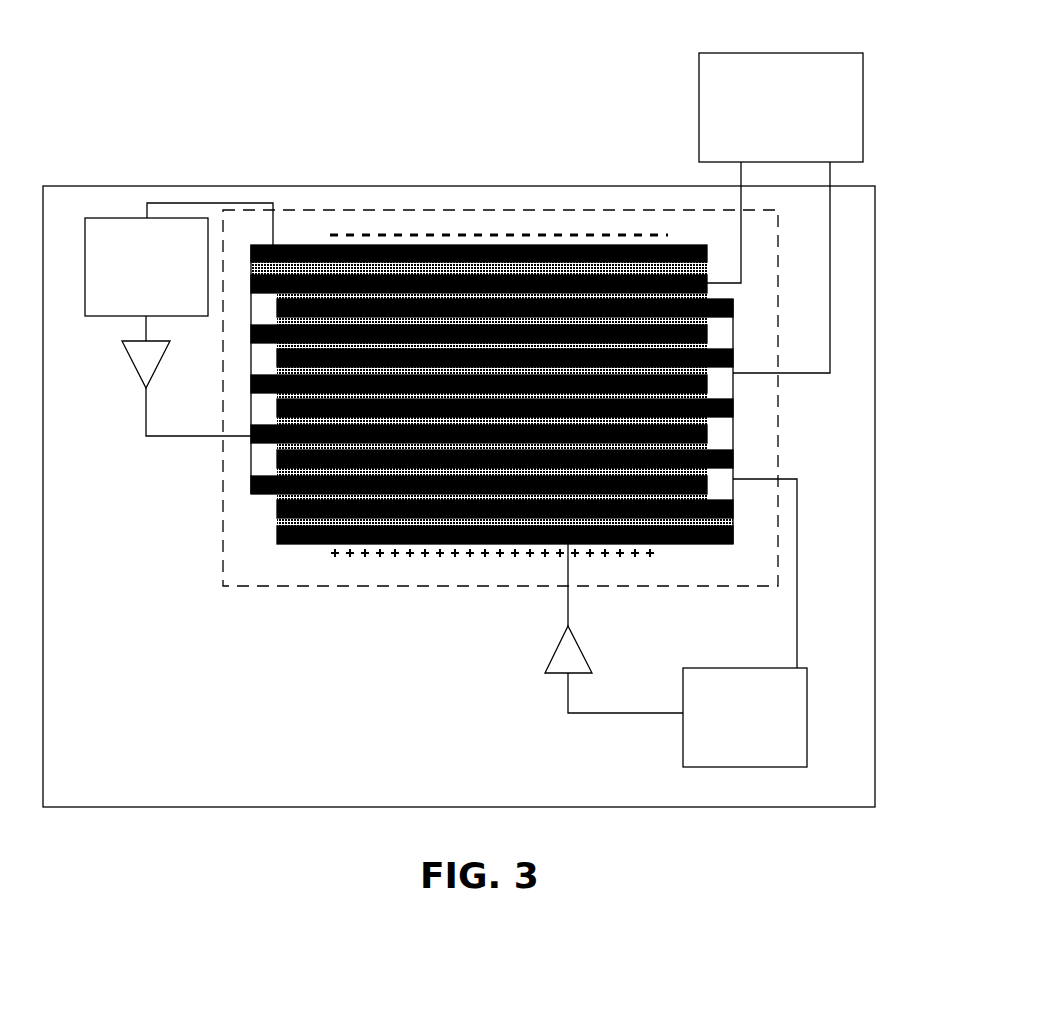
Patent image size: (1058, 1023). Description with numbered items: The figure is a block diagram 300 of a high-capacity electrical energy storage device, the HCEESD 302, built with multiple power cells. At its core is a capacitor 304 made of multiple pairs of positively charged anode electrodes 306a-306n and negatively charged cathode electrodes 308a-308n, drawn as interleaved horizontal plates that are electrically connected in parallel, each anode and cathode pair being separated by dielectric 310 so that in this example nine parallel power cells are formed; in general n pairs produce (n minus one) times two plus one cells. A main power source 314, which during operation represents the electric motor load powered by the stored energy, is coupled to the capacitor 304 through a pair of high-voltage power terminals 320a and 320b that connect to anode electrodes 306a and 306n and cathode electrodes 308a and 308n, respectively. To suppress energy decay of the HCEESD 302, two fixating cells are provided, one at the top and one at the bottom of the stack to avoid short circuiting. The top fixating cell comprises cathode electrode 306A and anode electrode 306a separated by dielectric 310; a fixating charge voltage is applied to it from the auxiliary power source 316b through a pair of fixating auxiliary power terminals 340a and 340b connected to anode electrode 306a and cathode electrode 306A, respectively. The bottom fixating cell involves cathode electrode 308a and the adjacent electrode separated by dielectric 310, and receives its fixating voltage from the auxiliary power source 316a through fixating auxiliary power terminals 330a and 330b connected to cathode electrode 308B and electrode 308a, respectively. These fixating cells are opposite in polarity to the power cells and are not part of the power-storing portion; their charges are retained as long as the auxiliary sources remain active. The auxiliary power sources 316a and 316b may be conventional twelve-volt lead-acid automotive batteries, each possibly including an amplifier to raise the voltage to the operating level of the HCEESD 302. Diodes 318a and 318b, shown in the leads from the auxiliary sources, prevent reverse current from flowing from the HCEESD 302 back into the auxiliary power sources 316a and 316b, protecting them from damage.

The block diagram 300 is at (428, 153).
The HCEESD 302 is at (459, 496).
The capacitor 304 is at (430, 587).
The anode electrode 306a is at (252, 282).
The cathode electrode 306A is at (303, 245).
The anode electrode 306n is at (250, 460).
The cathode electrode 308a is at (733, 300).
The cathode electrode 308B is at (317, 545).
The cathode electrode 308n is at (733, 428).
The dielectric 310 is at (290, 520).
The main power source 314 is at (781, 107).
The auxiliary power source 316a is at (745, 717).
The auxiliary power source 316b is at (146, 267).
The diode 318a is at (562, 673).
The diode 318b is at (145, 355).
The high-voltage power terminal 320a is at (741, 232).
The high-voltage power terminal 320b is at (830, 243).
The fixating auxiliary power terminal 330a is at (600, 714).
The fixating auxiliary power terminal 330b is at (800, 618).
The fixating auxiliary power terminal 340a is at (146, 425).
The fixating auxiliary power terminal 340b is at (175, 203).